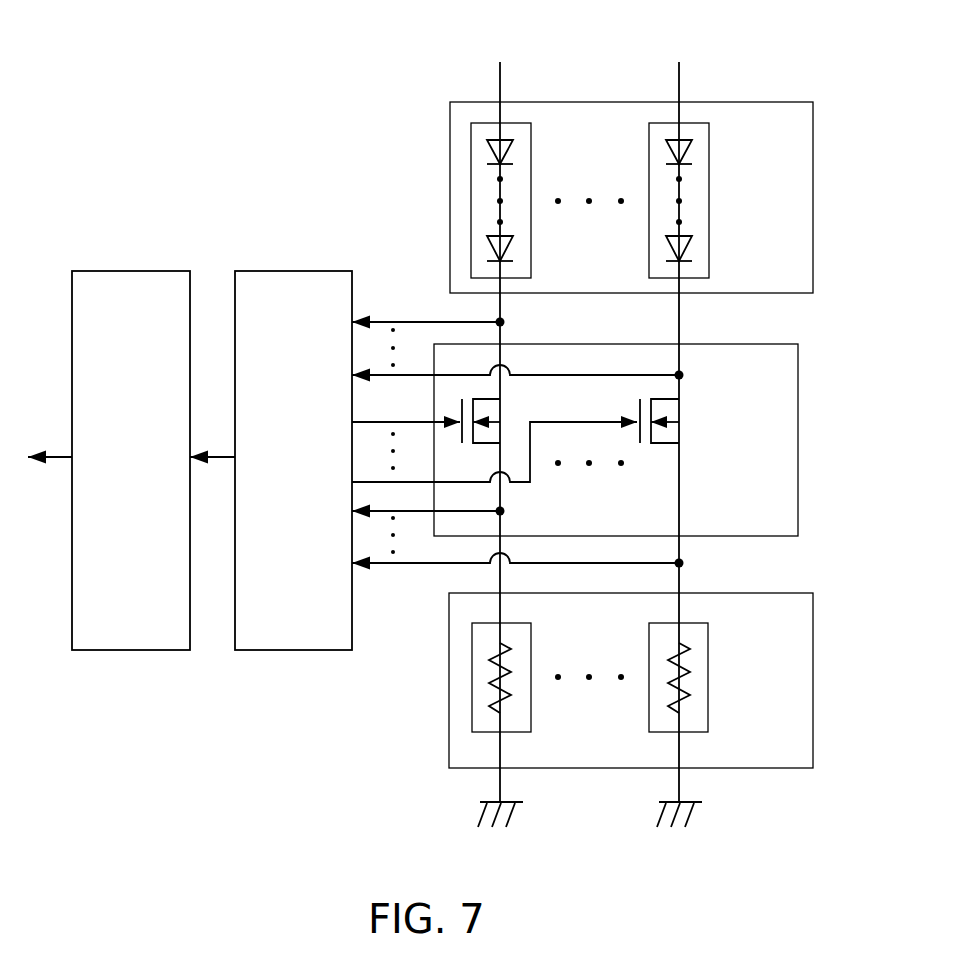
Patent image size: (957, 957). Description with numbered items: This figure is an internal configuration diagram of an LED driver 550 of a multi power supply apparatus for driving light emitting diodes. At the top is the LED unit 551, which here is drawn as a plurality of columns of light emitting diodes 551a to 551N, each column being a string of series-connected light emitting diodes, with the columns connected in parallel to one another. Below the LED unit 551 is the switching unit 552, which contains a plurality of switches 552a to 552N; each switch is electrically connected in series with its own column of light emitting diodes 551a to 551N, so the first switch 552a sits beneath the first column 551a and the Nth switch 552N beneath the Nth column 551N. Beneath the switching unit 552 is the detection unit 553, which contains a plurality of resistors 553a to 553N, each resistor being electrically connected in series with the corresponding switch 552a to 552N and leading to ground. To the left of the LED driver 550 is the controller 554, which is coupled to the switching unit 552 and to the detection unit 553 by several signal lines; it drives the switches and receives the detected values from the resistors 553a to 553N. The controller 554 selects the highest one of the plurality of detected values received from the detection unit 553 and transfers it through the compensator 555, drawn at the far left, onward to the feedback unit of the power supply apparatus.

The light source driving circuit 550 is at (347, 53).
The LED unit 551 is at (752, 102).
The column of light emitting diodes 551a is at (531, 150).
The column of light emitting diodes 551N is at (709, 150).
The switching unit 552 is at (724, 345).
The switch 552a is at (499, 416).
The switch 552N is at (678, 420).
The detection unit 553 is at (750, 593).
The resistor 553a is at (531, 650).
The resistor 553N is at (709, 650).
The controller 554 is at (288, 271).
The compensator 555 is at (126, 271).